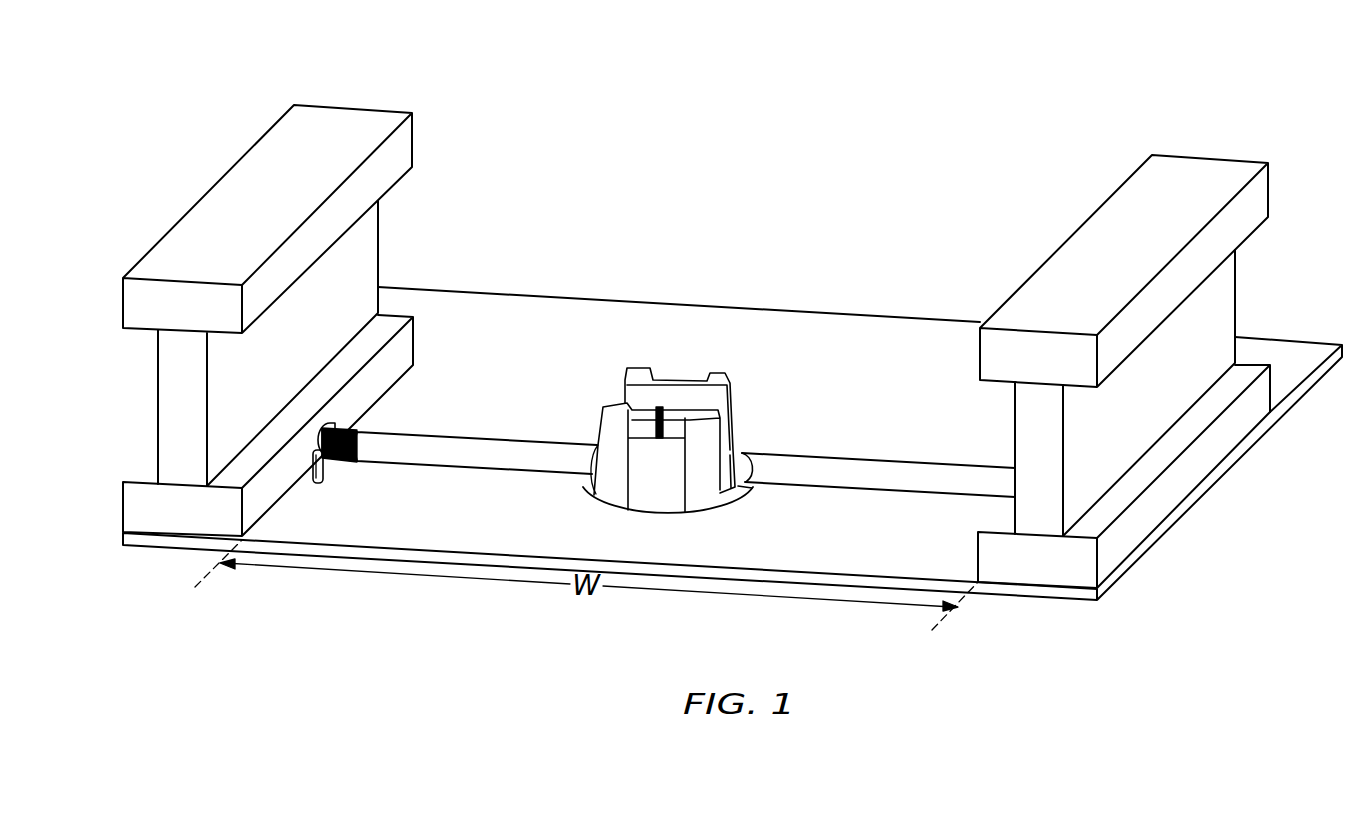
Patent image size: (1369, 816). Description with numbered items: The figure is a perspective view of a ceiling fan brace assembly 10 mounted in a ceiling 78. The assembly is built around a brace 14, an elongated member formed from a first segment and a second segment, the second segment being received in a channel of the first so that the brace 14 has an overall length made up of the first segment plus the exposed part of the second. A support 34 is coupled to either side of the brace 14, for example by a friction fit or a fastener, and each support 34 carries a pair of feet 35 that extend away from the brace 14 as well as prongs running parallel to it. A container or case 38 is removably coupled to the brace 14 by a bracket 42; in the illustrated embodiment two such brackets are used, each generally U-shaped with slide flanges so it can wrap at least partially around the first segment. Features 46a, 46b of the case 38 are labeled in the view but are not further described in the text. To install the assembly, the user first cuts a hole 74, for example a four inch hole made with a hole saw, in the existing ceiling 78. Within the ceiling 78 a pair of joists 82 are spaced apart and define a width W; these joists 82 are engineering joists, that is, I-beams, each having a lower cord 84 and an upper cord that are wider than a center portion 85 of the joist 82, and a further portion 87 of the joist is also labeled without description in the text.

The ceiling fan brace assembly 10 is at (644, 430).
The brace 14 is at (876, 442).
The support 34 is at (336, 410).
The feet 35 is at (324, 477).
The case 38 is at (644, 430).
The bracket 42 is at (732, 455).
The front jaw 46a is at (612, 433).
The rear jaw 46b is at (678, 392).
The hole 74 is at (605, 497).
The ceiling 78 is at (920, 332).
The joist 82 is at (699, 333).
The lower cord 84 is at (143, 512).
The center portion 85 is at (405, 140).
The web 87 is at (167, 408).